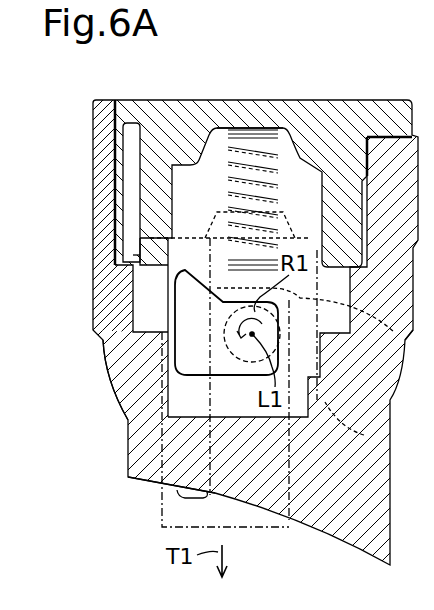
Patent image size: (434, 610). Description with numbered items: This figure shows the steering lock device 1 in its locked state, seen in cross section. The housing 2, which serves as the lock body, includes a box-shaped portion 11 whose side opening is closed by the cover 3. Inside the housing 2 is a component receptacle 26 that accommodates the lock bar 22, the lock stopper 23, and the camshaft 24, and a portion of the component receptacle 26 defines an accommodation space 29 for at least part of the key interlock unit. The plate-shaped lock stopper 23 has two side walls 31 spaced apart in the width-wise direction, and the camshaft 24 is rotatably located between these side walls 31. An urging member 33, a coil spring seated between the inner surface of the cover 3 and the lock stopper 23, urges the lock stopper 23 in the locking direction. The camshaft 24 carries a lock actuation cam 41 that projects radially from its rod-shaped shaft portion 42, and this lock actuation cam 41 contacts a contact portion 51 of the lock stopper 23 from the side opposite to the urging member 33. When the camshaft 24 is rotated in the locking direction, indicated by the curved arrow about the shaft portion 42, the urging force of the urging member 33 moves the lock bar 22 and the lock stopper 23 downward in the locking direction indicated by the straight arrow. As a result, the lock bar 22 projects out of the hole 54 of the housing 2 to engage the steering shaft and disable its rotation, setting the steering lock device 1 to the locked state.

The steering lock device 1 is at (71, 541).
The housing 2 is at (93, 168).
The cover 3 is at (146, 100).
The box-shaped portion 11 is at (93, 135).
The lock bar 22 is at (160, 507).
The lock stopper 23 is at (133, 362).
The camshaft 24 is at (284, 352).
The component receptacle 26 is at (118, 215).
The accommodation space 29 is at (83, 237).
The side walls 31 is at (364, 435).
The urging member 33 is at (280, 118).
The lock actuation cam 41 is at (183, 289).
The shaft portion 42 is at (232, 377).
The contact portion 51 is at (405, 340).
The hole 54 is at (284, 512).